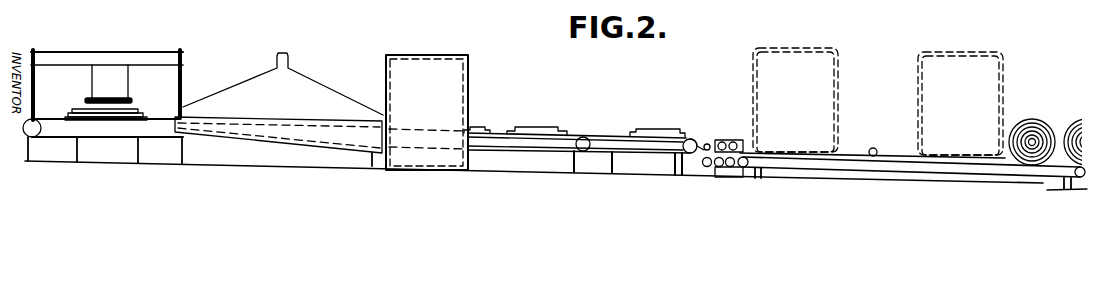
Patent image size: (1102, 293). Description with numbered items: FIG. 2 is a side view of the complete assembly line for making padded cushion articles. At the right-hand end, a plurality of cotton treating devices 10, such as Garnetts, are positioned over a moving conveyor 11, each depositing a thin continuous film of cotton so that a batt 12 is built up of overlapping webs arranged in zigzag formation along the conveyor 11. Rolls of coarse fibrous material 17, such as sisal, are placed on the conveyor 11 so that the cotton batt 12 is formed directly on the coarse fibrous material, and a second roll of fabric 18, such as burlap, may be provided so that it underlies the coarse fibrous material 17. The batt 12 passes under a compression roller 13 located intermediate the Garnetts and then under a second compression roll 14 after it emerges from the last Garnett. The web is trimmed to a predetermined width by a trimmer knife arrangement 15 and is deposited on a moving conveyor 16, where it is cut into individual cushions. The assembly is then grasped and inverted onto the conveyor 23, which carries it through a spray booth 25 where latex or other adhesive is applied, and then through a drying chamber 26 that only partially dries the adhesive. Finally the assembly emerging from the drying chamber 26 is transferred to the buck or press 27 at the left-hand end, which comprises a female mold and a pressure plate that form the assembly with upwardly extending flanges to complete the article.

The cotton treating device 10 is at (835, 77).
The conveyor 11 is at (1037, 176).
The batt 12 is at (905, 153).
The compression roller 13 is at (874, 148).
The second compression roll 14 is at (723, 141).
The trimmer knife arrangement 15 is at (708, 144).
The moving conveyor 16 is at (613, 153).
The roll of coarse fibrous material 17 is at (1040, 125).
The second roll of fabric 18 is at (1076, 126).
The conveyor 23 is at (553, 151).
The spray booth 25 is at (436, 62).
The drying chamber 26 is at (330, 97).
The buck 27 is at (160, 53).